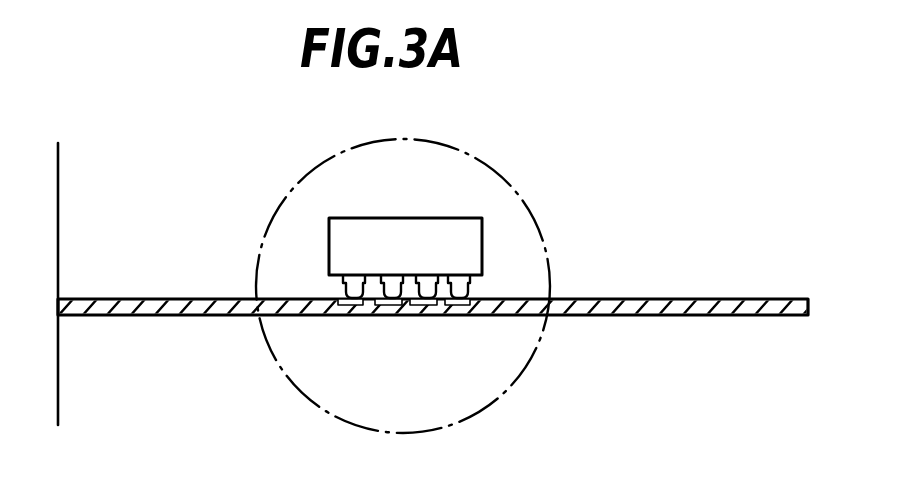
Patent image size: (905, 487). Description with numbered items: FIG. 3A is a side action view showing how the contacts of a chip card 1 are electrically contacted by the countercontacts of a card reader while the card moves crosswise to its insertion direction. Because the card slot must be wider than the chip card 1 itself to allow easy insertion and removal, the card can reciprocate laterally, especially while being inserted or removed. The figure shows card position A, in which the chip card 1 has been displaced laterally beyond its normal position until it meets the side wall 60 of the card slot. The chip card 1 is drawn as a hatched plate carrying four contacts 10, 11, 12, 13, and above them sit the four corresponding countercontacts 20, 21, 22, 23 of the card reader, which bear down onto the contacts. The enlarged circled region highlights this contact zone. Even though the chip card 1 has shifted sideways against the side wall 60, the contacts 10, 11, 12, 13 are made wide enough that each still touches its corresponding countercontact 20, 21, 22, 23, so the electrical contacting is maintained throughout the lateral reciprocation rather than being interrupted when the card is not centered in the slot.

The chip card 1 is at (718, 298).
The contact 10 is at (356, 306).
The contact 11 is at (383, 306).
The contact 12 is at (424, 306).
The contact 13 is at (457, 306).
The countercontact 20 is at (353, 287).
The countercontact 21 is at (390, 278).
The countercontact 22 is at (425, 279).
The countercontact 23 is at (460, 287).
The side wall 60 is at (58, 183).